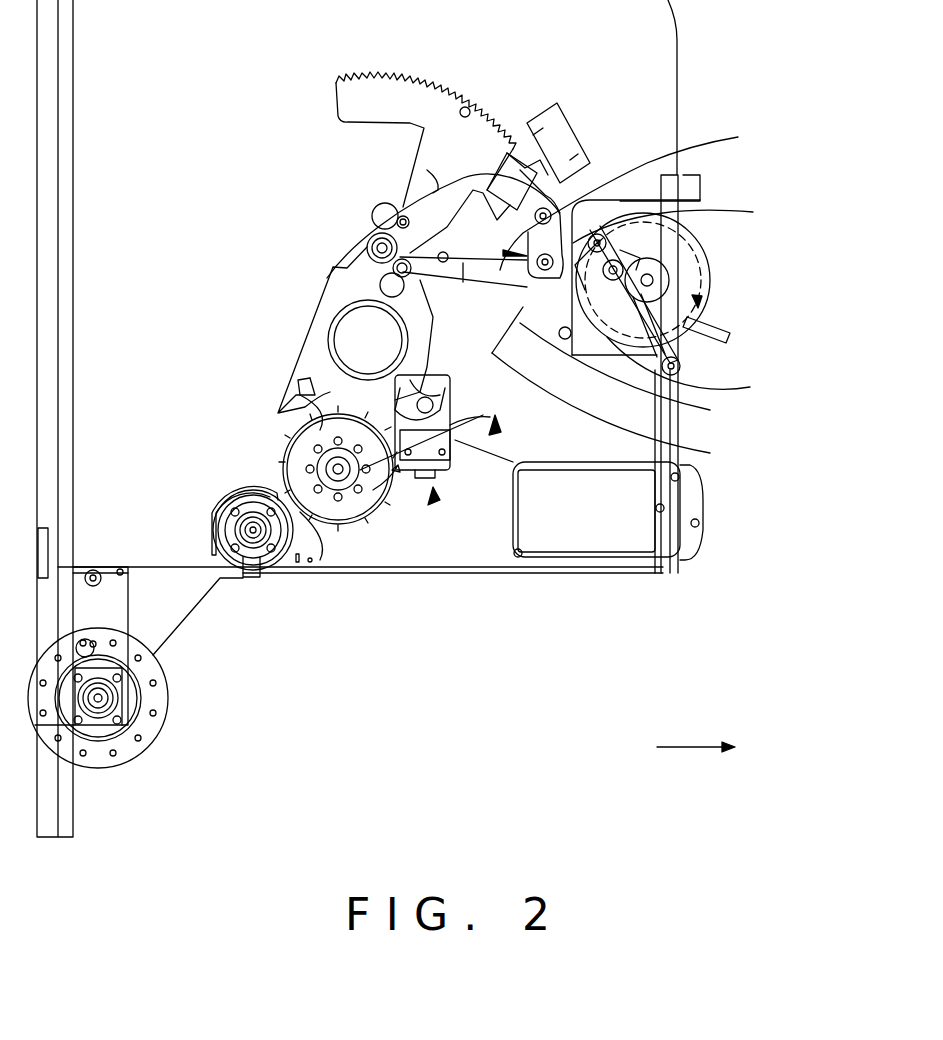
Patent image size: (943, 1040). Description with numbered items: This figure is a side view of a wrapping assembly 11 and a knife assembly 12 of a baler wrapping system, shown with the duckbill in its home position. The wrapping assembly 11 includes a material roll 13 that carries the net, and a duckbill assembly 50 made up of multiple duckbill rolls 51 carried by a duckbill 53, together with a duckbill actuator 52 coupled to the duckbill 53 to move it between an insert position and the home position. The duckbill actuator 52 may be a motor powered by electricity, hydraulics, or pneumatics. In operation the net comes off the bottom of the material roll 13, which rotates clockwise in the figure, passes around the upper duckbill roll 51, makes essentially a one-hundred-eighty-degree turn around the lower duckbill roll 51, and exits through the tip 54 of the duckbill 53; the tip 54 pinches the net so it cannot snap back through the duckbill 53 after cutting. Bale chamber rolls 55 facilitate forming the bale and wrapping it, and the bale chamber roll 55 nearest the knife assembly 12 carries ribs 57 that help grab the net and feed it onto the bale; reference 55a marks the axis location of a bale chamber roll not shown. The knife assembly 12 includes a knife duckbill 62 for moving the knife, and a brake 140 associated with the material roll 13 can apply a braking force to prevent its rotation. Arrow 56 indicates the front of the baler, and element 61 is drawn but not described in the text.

The wrapping assembly 11 is at (543, 80).
The knife assembly 12 is at (433, 487).
The material roll 13 is at (713, 267).
The duckbill assembly 50 is at (502, 255).
The duckbill rolls 51 is at (644, 200).
The duckbill actuator 52 is at (520, 170).
The duckbill 53 is at (696, 366).
The tip 54 is at (710, 453).
The bale chamber rolls 55 is at (340, 507).
The axis of a bale chamber roll 55a is at (362, 342).
The arrow 56 is at (695, 747).
The ribs 57 is at (320, 525).
The housing 61 is at (495, 418).
The knife duckbill 62 is at (458, 455).
The brake 140 is at (707, 290).